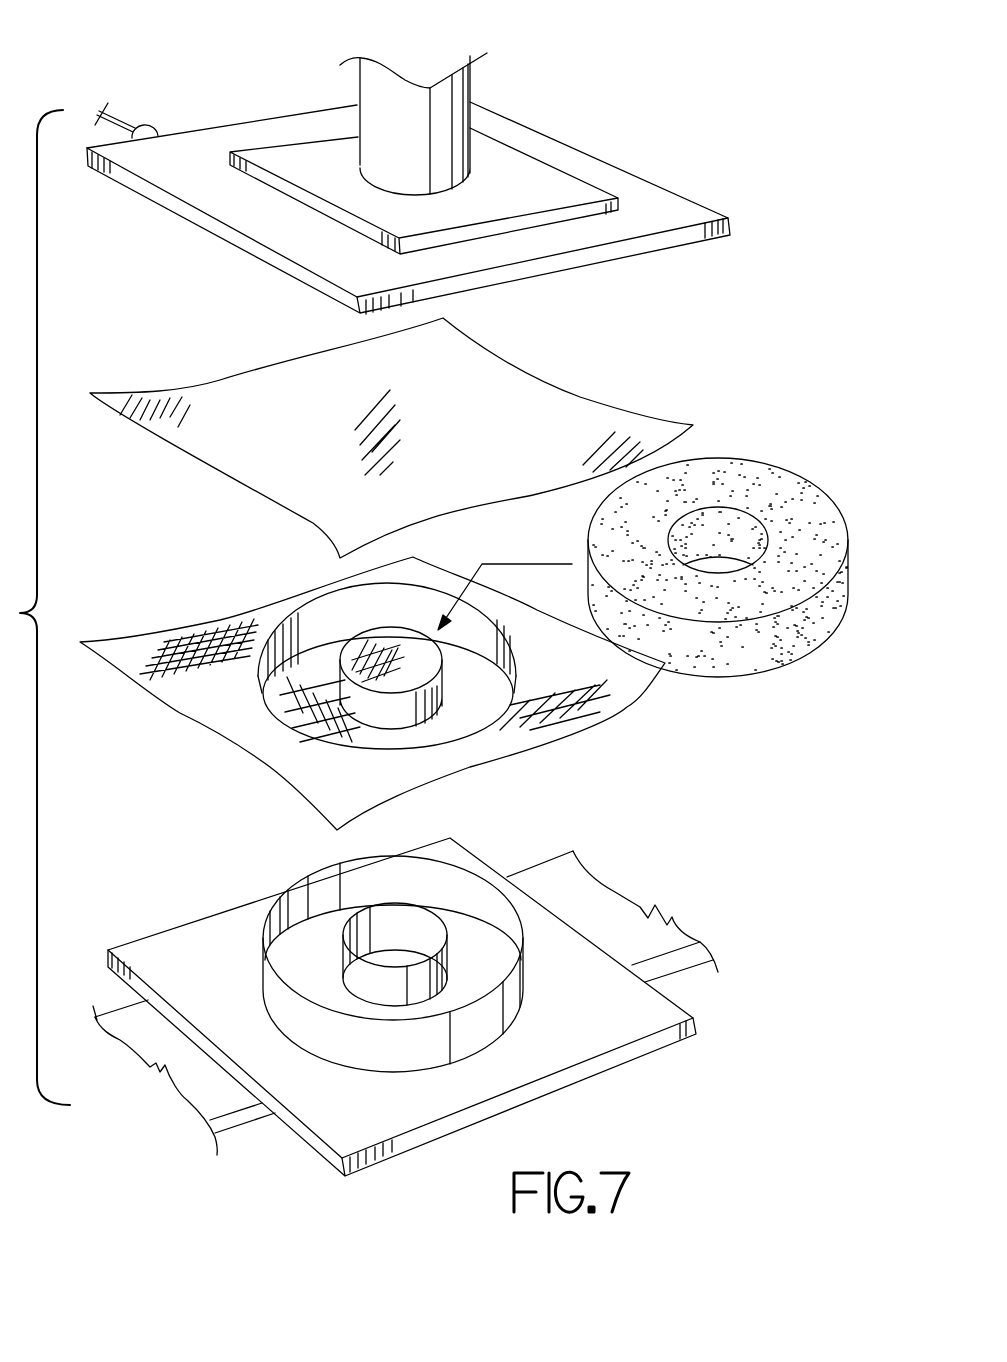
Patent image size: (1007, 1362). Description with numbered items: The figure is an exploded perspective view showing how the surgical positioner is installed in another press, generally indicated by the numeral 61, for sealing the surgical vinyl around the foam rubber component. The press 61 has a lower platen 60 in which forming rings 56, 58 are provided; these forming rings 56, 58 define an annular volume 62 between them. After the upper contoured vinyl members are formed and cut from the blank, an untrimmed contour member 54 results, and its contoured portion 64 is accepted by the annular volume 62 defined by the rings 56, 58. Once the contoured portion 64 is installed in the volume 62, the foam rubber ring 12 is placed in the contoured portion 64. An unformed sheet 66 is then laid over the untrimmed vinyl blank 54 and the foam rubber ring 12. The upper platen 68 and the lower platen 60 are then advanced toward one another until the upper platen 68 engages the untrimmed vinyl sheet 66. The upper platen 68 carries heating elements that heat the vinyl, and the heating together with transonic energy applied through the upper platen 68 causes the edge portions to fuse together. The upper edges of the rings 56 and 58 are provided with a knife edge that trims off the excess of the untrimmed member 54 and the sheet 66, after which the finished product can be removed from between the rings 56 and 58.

The press 61 is at (593, 106).
The upper platen 68 is at (688, 212).
The unformed sheet 66 is at (575, 417).
The foam rubber ring 12 is at (788, 495).
The untrimmed contour member 54 is at (597, 712).
The contoured portion 64 is at (495, 692).
The forming ring 58 is at (418, 923).
The forming ring 56 is at (492, 903).
The annular volume 62 is at (485, 964).
The lower platen 60 is at (658, 1017).